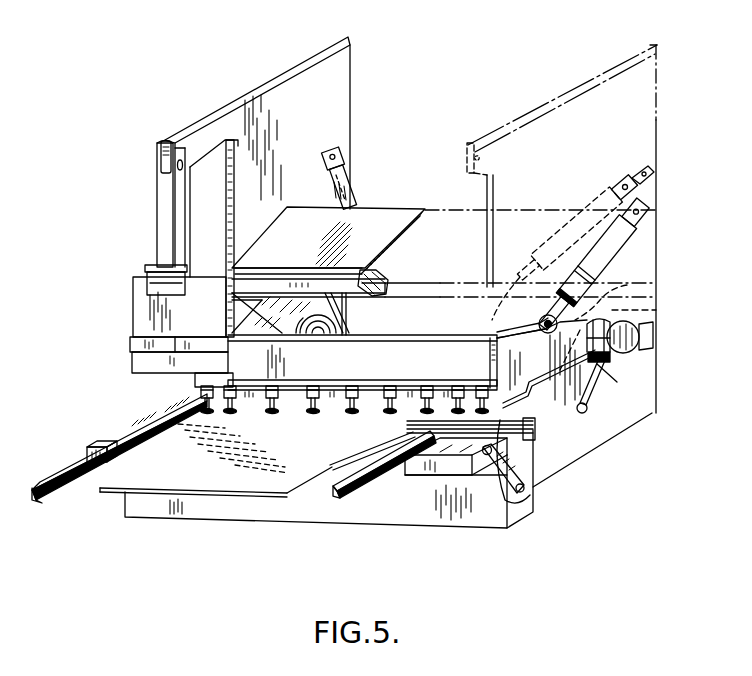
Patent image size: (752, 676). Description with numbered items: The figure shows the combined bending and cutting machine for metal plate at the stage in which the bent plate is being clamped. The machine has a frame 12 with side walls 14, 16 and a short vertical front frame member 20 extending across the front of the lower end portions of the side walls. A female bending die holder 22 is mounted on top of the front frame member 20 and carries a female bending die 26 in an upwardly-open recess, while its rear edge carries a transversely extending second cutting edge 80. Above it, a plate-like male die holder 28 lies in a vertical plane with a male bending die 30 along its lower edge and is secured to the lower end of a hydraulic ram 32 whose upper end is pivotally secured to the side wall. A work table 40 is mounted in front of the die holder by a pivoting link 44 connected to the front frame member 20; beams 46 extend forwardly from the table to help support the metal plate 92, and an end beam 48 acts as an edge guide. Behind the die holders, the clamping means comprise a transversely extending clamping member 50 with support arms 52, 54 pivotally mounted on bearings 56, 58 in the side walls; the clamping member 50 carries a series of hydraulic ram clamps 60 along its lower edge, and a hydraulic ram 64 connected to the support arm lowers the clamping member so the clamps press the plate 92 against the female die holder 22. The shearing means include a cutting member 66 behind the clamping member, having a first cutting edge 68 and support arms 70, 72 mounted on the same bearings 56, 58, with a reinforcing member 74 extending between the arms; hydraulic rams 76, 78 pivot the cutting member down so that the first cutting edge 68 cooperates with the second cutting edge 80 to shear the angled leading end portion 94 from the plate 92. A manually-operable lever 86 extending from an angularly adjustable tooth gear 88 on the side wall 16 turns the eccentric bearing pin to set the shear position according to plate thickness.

The frame 12 is at (210, 106).
The side wall 14 is at (272, 78).
The side wall 16 is at (640, 89).
The front frame member 20 is at (247, 508).
The female bending die holder 22 is at (522, 488).
The female bending die 26 is at (538, 433).
The male die holder 28 is at (133, 305).
The male bending die 30 is at (133, 362).
The hydraulic ram 32 is at (157, 200).
The work table 40 is at (100, 441).
The pivoting link 44 is at (520, 518).
The beams 46 is at (350, 493).
The end beam 48 is at (53, 503).
The clamping member 50 is at (392, 349).
The clamp support arm 52 is at (226, 318).
The clamp support arm 54 is at (500, 343).
The bearing 56 is at (325, 330).
The bearing 58 is at (640, 343).
The hydraulic ram clamps 60 is at (312, 414).
The hydraulic ram 64 is at (627, 250).
The cutting member 66 is at (400, 207).
The first cutting edge 68 is at (308, 272).
The shear support arm 70 is at (346, 313).
The shear support arm 72 is at (627, 285).
The reinforcing member 74 is at (385, 270).
The hydraulic ram 76 is at (347, 203).
The hydraulic ram 78 is at (606, 174).
The second cutting edge 80 is at (535, 430).
The manually-operable lever 86 is at (595, 392).
The tooth gear 88 is at (607, 362).
The metal plate 92 is at (148, 478).
The leading end portion 94 is at (434, 365).